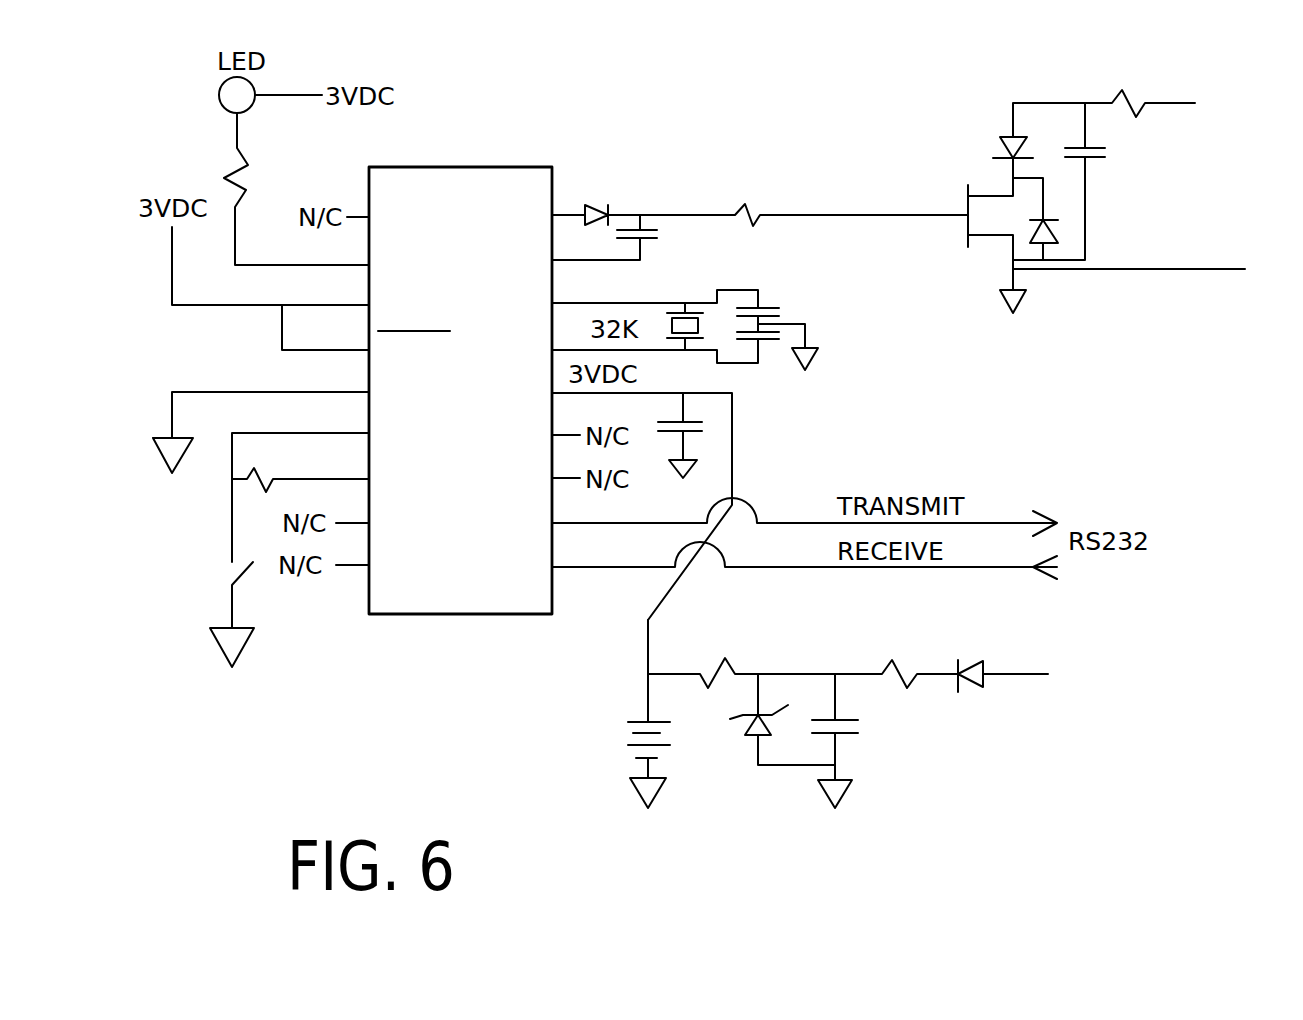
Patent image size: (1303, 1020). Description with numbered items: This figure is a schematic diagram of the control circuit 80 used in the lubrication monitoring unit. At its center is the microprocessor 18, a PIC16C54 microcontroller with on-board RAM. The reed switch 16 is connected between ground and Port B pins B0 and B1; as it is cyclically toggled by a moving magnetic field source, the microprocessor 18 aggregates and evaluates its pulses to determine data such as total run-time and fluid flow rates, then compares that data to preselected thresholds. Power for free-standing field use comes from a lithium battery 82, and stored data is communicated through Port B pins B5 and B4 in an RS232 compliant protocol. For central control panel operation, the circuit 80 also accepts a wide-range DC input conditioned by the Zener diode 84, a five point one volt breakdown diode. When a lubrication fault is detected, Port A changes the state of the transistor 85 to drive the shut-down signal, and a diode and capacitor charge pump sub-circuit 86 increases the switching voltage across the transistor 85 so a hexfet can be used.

The reed switch 16 is at (230, 571).
The microprocessor 18 is at (432, 614).
The control circuit 80 is at (962, 770).
The lithium battery 82 is at (622, 738).
The Zener diode 84 is at (740, 726).
The transistor 85 is at (967, 225).
The charge pump sub-circuit 86 is at (953, 129).